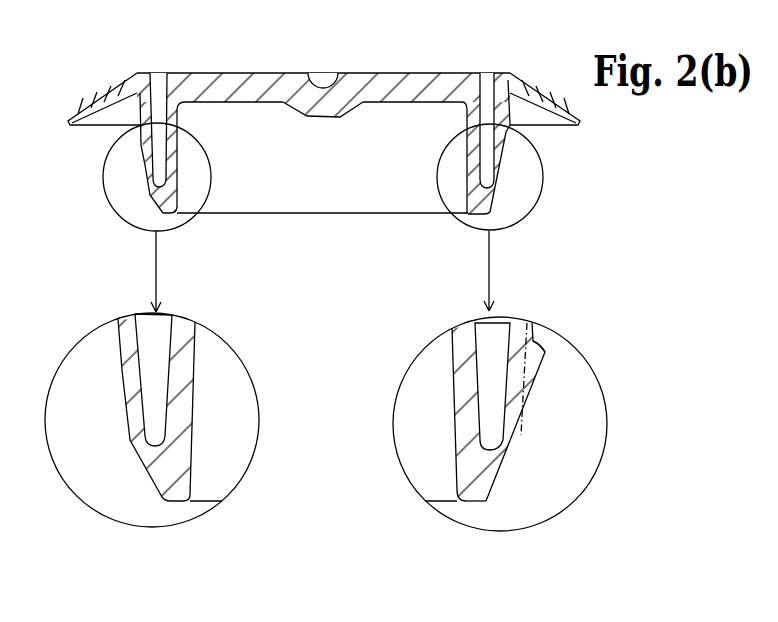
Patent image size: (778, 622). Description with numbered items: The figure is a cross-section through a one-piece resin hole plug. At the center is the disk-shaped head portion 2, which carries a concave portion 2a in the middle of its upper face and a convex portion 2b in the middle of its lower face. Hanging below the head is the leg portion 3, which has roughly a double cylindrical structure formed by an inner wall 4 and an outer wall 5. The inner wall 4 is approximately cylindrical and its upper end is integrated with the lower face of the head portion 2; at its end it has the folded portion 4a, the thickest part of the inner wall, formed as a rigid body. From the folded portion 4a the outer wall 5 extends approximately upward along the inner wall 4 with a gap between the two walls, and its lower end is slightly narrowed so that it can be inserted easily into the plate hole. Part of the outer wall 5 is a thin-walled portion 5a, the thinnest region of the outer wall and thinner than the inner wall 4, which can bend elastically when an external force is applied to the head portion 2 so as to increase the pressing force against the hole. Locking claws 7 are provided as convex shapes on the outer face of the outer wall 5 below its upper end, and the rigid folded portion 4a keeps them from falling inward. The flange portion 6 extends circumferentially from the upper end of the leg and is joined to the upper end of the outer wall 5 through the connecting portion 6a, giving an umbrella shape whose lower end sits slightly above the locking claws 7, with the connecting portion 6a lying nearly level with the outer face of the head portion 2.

The head portion 2 is at (227, 75).
The concave portion 2a is at (335, 76).
The convex portion 2b is at (316, 120).
The leg portion 3 is at (122, 182).
The inner wall 4 is at (179, 143).
The folded portion 4a is at (167, 501).
The outer wall 5 is at (136, 127).
The thin-walled portion 5a is at (112, 377).
The flange portion 6 is at (93, 105).
The connecting portion 6a is at (508, 72).
The locking claw 7 is at (546, 354).